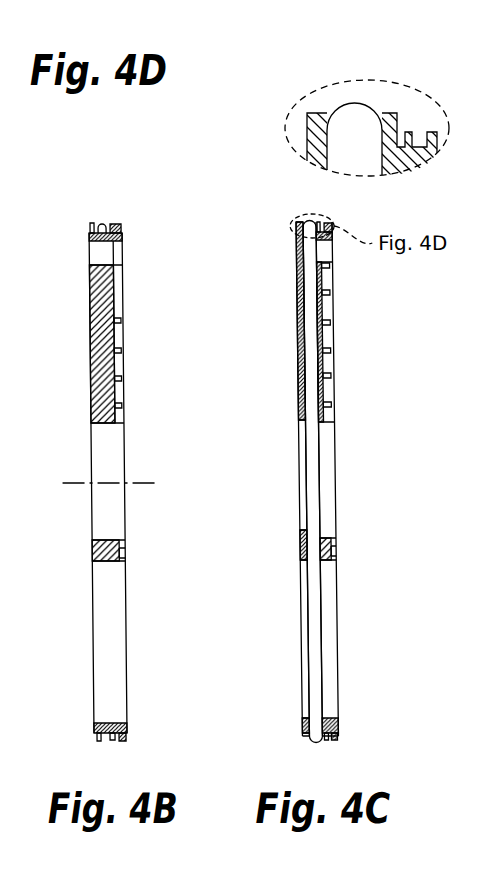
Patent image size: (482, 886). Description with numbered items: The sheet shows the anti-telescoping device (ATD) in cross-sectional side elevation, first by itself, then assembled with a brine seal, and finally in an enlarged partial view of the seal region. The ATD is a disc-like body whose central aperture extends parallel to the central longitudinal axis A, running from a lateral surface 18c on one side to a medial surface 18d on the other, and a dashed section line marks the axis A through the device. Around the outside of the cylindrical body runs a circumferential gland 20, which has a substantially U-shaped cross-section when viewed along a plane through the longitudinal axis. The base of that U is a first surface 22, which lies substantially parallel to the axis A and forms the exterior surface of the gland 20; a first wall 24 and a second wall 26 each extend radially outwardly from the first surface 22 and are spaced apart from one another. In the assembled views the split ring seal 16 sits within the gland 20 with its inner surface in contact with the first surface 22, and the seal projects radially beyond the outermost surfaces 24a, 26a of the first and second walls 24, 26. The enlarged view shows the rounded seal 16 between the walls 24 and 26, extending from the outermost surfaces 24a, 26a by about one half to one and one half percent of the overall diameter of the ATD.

In FIG. 4C, the split ring seal 16 is at (318, 742).
In FIG. 4D, the split ring seal 16 is at (354, 103).
In FIG. 4B, the lateral surface 18c is at (89, 302).
In FIG. 4B, the medial surface 18d is at (123, 302).
In FIG. 4B, the circumferential gland 20 is at (100, 743).
In FIG. 4B, the first surface 22 is at (101, 229).
In FIG. 4B, the first wall 24 is at (90, 224).
In FIG. 4B, the second wall 26 is at (112, 224).
In FIG. 4D, the outermost surface of first wall 24a is at (317, 113).
In FIG. 4D, the outermost surface of second wall 26a is at (391, 113).
In FIG. 4B, the central longitudinal axis A is at (120, 483).